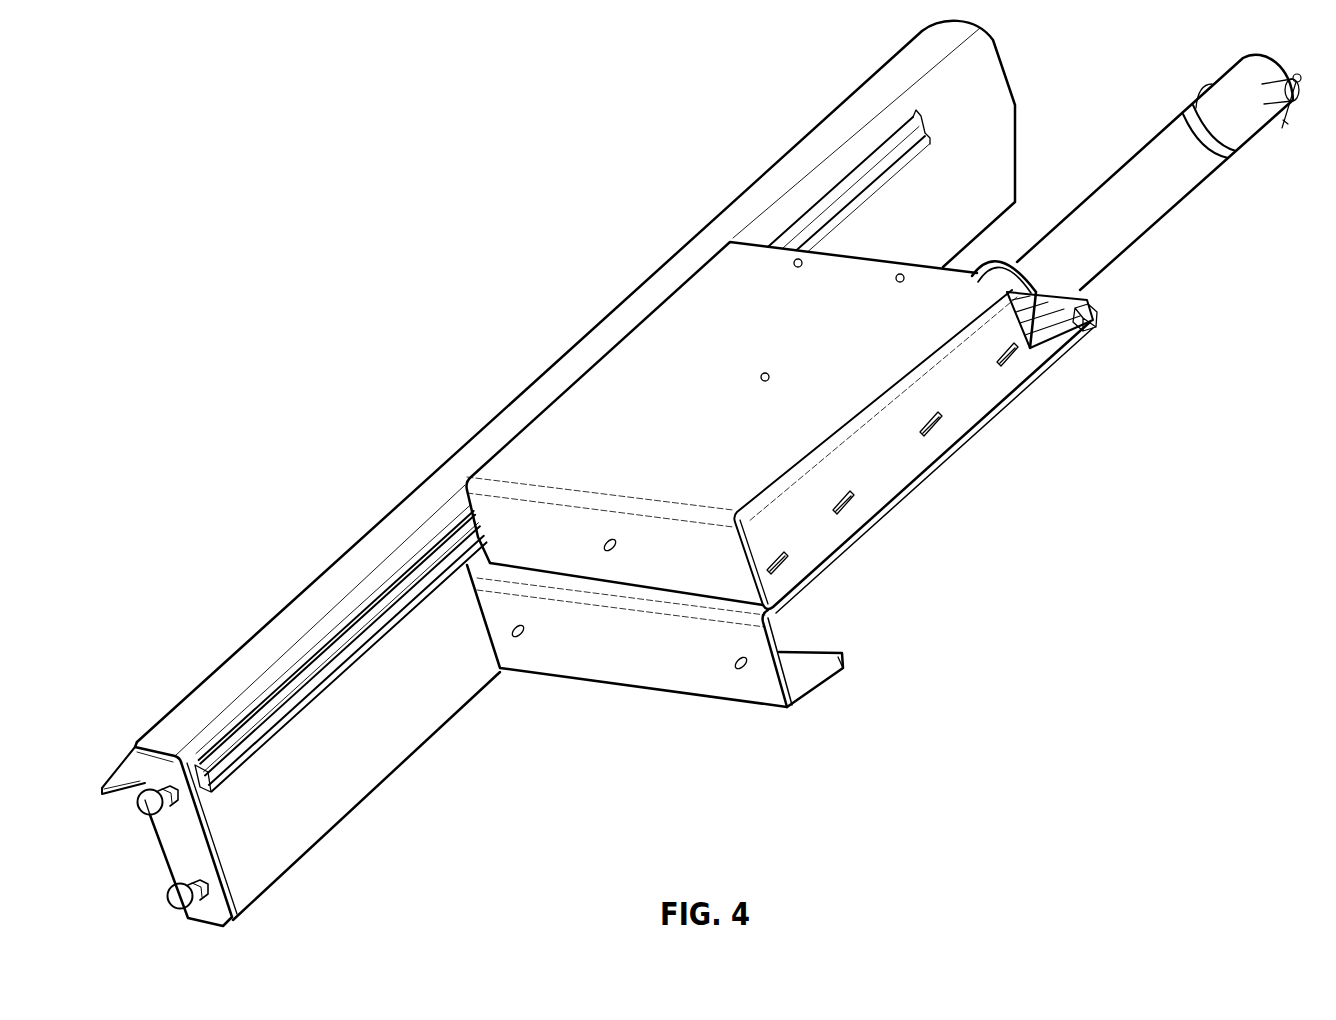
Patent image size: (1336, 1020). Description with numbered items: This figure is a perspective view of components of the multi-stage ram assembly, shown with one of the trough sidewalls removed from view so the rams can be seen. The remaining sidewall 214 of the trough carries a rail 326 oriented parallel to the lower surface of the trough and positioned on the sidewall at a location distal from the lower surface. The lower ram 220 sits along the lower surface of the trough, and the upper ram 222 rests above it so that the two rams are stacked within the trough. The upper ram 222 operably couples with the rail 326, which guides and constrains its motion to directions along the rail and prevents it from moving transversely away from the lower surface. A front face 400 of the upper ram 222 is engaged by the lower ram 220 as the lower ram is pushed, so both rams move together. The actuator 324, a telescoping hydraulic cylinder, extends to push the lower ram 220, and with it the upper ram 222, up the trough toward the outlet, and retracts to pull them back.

The sidewall 214 is at (303, 753).
The rail 326 is at (383, 615).
The upper ram 222 is at (628, 404).
The front face 400 is at (720, 563).
The lower ram 220 is at (698, 670).
The actuator 324 is at (1108, 207).